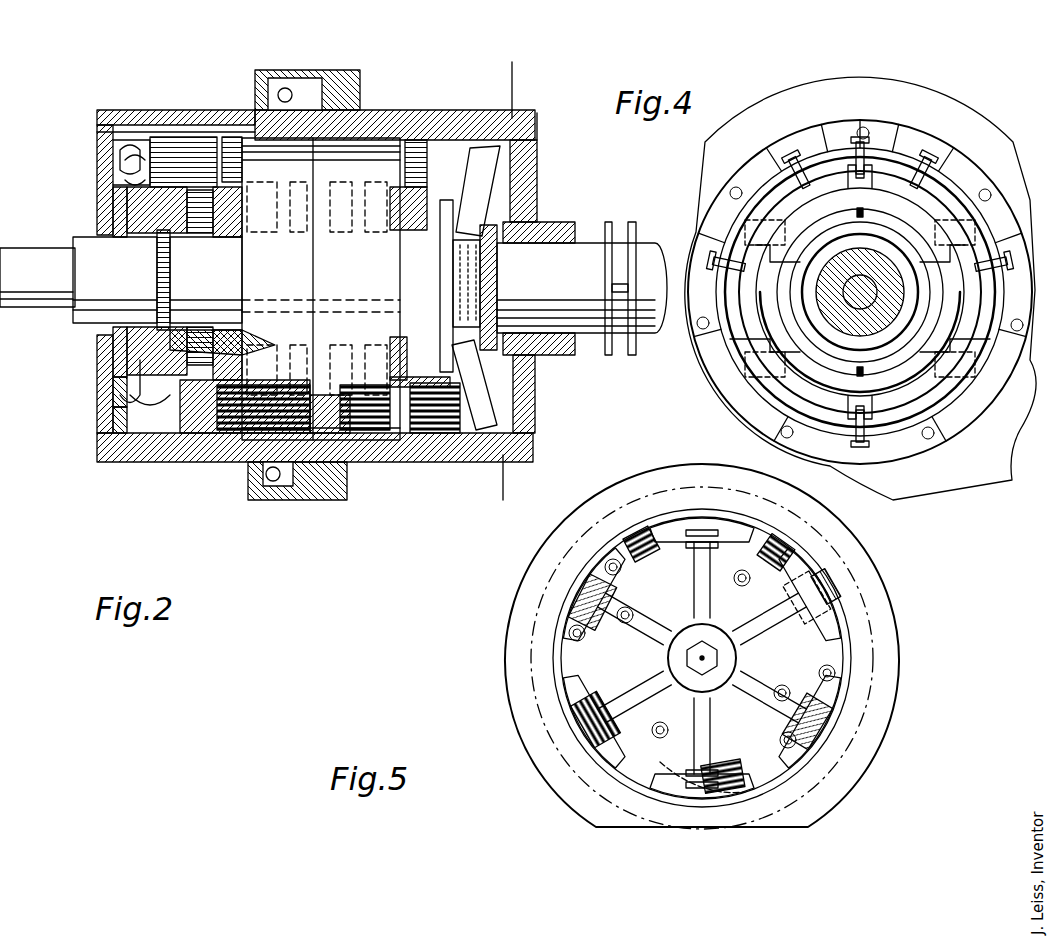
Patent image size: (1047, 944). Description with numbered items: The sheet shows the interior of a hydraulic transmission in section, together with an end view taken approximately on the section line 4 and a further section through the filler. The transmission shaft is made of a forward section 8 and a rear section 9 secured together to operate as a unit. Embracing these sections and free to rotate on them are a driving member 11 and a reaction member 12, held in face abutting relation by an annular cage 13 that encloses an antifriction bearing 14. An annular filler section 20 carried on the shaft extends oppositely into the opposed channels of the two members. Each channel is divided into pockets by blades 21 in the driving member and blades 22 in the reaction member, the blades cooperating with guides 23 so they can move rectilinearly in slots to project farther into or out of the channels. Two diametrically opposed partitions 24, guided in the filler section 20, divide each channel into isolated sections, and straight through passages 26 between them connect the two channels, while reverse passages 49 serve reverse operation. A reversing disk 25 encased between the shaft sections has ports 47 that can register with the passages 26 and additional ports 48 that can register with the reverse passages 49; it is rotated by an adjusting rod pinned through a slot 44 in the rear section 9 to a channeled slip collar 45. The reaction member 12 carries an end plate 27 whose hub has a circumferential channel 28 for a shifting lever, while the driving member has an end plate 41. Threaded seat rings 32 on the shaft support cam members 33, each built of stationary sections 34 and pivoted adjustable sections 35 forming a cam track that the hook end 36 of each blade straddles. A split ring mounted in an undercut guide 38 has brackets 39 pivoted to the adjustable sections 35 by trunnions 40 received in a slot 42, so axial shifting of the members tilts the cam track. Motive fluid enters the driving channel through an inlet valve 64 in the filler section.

In FIG. 2, the section line 4— 4 is at (519, 278).
In FIG. 2, the forward section of the transmission shaft 8 is at (121, 280).
In FIG. 2, the rear section of the transmission shaft 9 is at (582, 288).
In FIG. 2, the driving member 11 is at (182, 462).
In FIG. 2, the reaction member 12 is at (440, 462).
In FIG. 2, the annular cage 13 is at (305, 498).
In FIG. 2, the antifriction bearing 14 is at (272, 482).
In FIG. 2, the annular filler section 20 is at (321, 289).
In FIG. 2, the blades of channel 17 21 is at (218, 145).
In FIG. 2, the blades of channel 18 22 is at (455, 400).
In FIG. 4, the blades of channel 18 22 is at (815, 205).
In FIG. 4, the guides 23 is at (795, 150).
In FIG. 2, the partitions 24 is at (225, 425).
In FIG. 5, the partitions 24 is at (590, 600).
In FIG. 5, the reversing disk 25 is at (830, 585).
In FIG. 5, the straight through passages 26 is at (676, 520).
In FIG. 2, the end plate 27 is at (537, 168).
In FIG. 2, the circumferential channel 28 is at (565, 222).
In FIG. 2, the threaded seat rings 32 is at (165, 238).
In FIG. 2, the cam member 33 is at (170, 330).
In FIG. 4, the stationary cam sections 34 is at (725, 330).
In FIG. 2, the adjustable cam sections 35 is at (160, 150).
In FIG. 4, the adjustable cam sections 35 is at (905, 140).
In FIG. 2, the hook end 36 is at (130, 140).
In FIG. 2, the undercut guide 38 is at (115, 420).
In FIG. 2, the brackets 39 is at (128, 185).
In FIG. 2, the trunnions 40 is at (128, 160).
In FIG. 2, the end plate of the driving member 41 is at (110, 400).
In FIG. 2, the slot 42 is at (160, 405).
In FIG. 2, the slot 44 is at (633, 240).
In FIG. 2, the channeled slip collar 45 is at (630, 355).
In FIG. 5, the ports 47 is at (642, 530).
In FIG. 5, the additional ports 48 is at (753, 545).
In FIG. 5, the reverse passages 49 is at (660, 775).
In FIG. 5, the inlet valve 64 is at (835, 670).